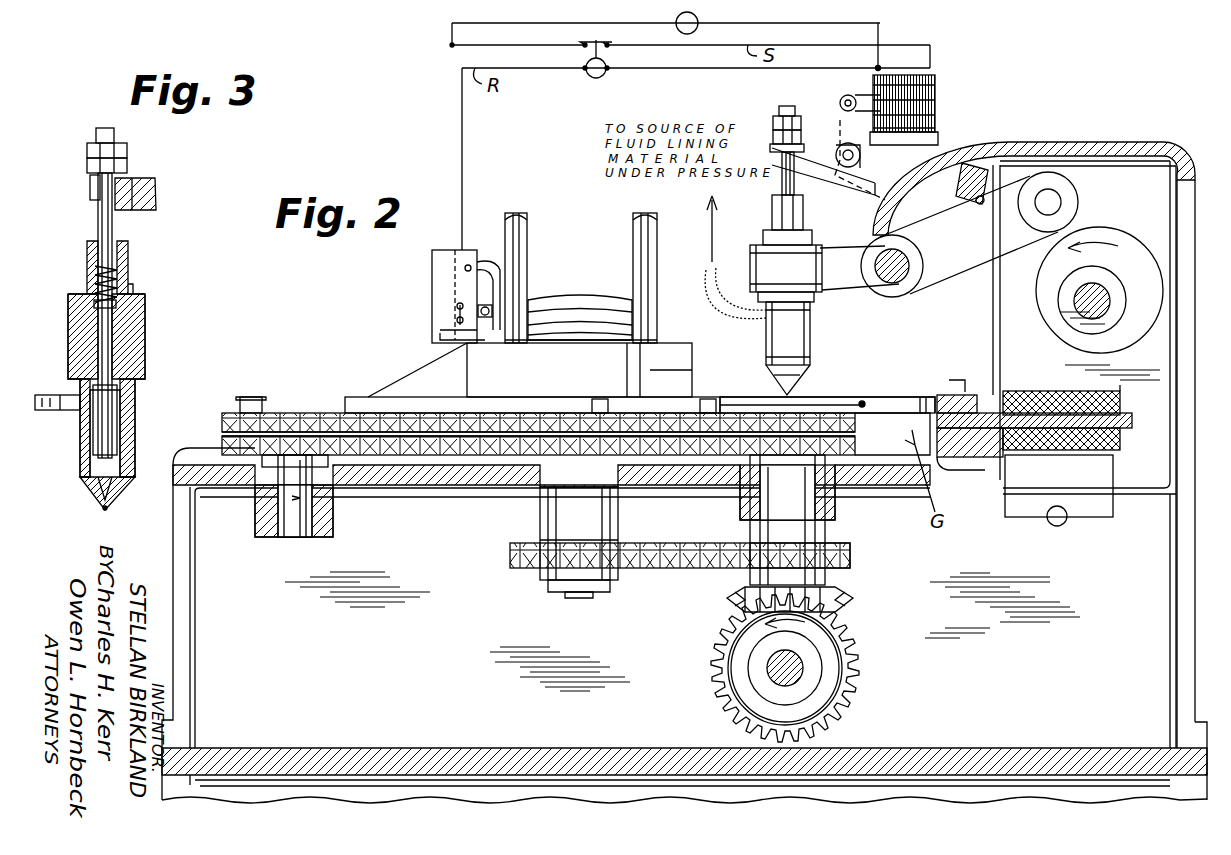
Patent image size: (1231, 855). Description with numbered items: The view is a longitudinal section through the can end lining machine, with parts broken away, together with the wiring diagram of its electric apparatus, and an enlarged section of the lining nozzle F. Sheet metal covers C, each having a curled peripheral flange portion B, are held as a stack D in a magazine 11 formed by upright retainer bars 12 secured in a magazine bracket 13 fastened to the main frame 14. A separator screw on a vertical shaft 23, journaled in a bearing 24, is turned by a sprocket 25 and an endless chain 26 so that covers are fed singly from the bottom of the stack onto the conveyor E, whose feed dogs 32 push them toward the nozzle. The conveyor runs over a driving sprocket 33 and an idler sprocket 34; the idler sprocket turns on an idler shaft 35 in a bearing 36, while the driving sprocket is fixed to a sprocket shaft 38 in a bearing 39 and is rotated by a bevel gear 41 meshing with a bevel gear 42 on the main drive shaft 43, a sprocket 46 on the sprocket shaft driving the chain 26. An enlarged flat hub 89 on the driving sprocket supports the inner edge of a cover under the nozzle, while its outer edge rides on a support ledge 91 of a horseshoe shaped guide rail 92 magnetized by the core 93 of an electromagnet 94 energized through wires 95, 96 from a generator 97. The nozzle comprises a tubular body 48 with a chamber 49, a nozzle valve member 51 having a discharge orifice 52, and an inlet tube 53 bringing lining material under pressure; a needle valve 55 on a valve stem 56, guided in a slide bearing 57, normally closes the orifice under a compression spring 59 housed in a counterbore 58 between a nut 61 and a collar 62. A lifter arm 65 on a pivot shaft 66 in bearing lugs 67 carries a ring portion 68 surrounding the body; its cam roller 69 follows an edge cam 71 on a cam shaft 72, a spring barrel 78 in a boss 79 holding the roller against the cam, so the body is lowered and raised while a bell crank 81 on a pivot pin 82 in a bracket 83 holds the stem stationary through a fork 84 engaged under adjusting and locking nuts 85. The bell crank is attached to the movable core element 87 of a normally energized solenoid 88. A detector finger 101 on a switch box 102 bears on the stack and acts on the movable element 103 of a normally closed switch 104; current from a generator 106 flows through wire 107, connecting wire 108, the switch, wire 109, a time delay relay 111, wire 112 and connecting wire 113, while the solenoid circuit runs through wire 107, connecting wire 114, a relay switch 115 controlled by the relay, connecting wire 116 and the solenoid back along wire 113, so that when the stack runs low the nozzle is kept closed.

In FIG. 2, the magazine 11 is at (620, 282).
In FIG. 2, the upright retainer bars 12 is at (527, 222).
In FIG. 2, the magazine bracket 13 is at (675, 355).
In FIG. 2, the frame 14 is at (180, 470).
In FIG. 2, the vertical shaft 23 is at (578, 598).
In FIG. 2, the bearing 24 is at (560, 518).
In FIG. 2, the sprocket 25 is at (556, 580).
In FIG. 2, the endless chain 26 is at (655, 568).
In FIG. 2, the feed dogs 32 is at (240, 400).
In FIG. 2, the driving sprocket 33 is at (855, 440).
In FIG. 2, the idler sprocket 34 is at (222, 425).
In FIG. 2, the idler shaft 35 is at (295, 520).
In FIG. 2, the bearing 36 is at (330, 515).
In FIG. 2, the sprocket shaft 38 is at (770, 497).
In FIG. 2, the bearing 39 is at (760, 528).
In FIG. 2, the bevel gear 41 is at (848, 592).
In FIG. 2, the bevel gear 42 is at (850, 648).
In FIG. 2, the main drive shaft 43 is at (798, 670).
In FIG. 2, the sprocket 46 is at (850, 552).
In FIG. 3, the tubular body 48 is at (140, 368).
In FIG. 2, the tubular body 48 is at (800, 332).
In FIG. 3, the chamber 49 is at (82, 430).
In FIG. 3, the nozzle valve member 51 is at (108, 500).
In FIG. 2, the nozzle valve member 51 is at (795, 385).
In FIG. 3, the discharge orifice 52 is at (102, 508).
In FIG. 3, the inlet tube 53 is at (45, 395).
In FIG. 2, the inlet tube 53 is at (728, 316).
In FIG. 3, the needle valve 55 is at (85, 488).
In FIG. 3, the valve stem 56 is at (98, 222).
In FIG. 2, the valve stem 56 is at (782, 185).
In FIG. 3, the slide bearing 57 is at (130, 335).
In FIG. 3, the counterbore 58 is at (135, 285).
In FIG. 3, the compression spring 59 is at (98, 280).
In FIG. 3, the nut 61 is at (125, 248).
In FIG. 2, the nut 61 is at (772, 212).
In FIG. 3, the collar 62 is at (96, 304).
In FIG. 2, the lifter arm 65 is at (860, 270).
In FIG. 2, the pivot shaft 66 is at (892, 283).
In FIG. 2, the bearing lugs 67 is at (958, 282).
In FIG. 2, the ring portion 68 is at (786, 273).
In FIG. 2, the cam roller 69 is at (1078, 195).
In FIG. 2, the edge cam 71 is at (1118, 262).
In FIG. 2, the cam shaft 72 is at (1082, 305).
In FIG. 2, the spring barrel 78 is at (978, 204).
In FIG. 2, the boss 79 is at (961, 186).
In FIG. 3, the bell crank 81 is at (150, 185).
In FIG. 2, the bell crank 81 is at (822, 165).
In FIG. 2, the pivot pin 82 is at (848, 167).
In FIG. 2, the bracket 83 is at (917, 135).
In FIG. 3, the fork 84 is at (92, 188).
In FIG. 2, the fork 84 is at (800, 150).
In FIG. 3, the adjusting and locking nuts 85 is at (128, 152).
In FIG. 2, the adjusting and locking nuts 85 is at (777, 118).
In FIG. 2, the movable core element 87 is at (865, 88).
In FIG. 2, the electric solenoid 88 is at (918, 82).
In FIG. 2, the enlarged flat hub 89 is at (755, 397).
In FIG. 2, the support ledge 91 is at (924, 397).
In FIG. 2, the horseshoe shaped guide rail 92 is at (945, 395).
In FIG. 2, the core 93 is at (1120, 400).
In FIG. 2, the electromagnet 94 is at (1120, 440).
In FIG. 2, the wire 95 is at (1010, 440).
In FIG. 2, the wire 96 is at (1113, 500).
In FIG. 2, the generator 97 is at (1065, 523).
In FIG. 2, the detector finger 101 is at (495, 262).
In FIG. 2, the switch box 102 is at (432, 268).
In FIG. 2, the movable element 103 is at (492, 308).
In FIG. 2, the electric switch 104 is at (440, 315).
In FIG. 2, the generator 106 is at (698, 25).
In FIG. 2, the wire 107 is at (664, 40).
In FIG. 2, the connecting wire 108 is at (452, 128).
In FIG. 2, the wire 109 is at (462, 143).
In FIG. 2, the time delay relay 111 is at (586, 70).
In FIG. 2, the wire 112 is at (650, 68).
In FIG. 2, the connecting wire 113 is at (880, 25).
In FIG. 2, the connecting wire 114 is at (507, 44).
In FIG. 2, the relay switch 115 is at (593, 42).
In FIG. 2, the connecting wire 116 is at (805, 28).
In FIG. 2, the curled peripheral flange portion B is at (865, 400).
In FIG. 2, the sheet metal end member C is at (495, 397).
In FIG. 2, the stack D is at (595, 288).
In FIG. 2, the conveyor E is at (430, 437).
In FIG. 3, the lining nozzle F is at (132, 286).
In FIG. 2, the lining nozzle F is at (806, 345).